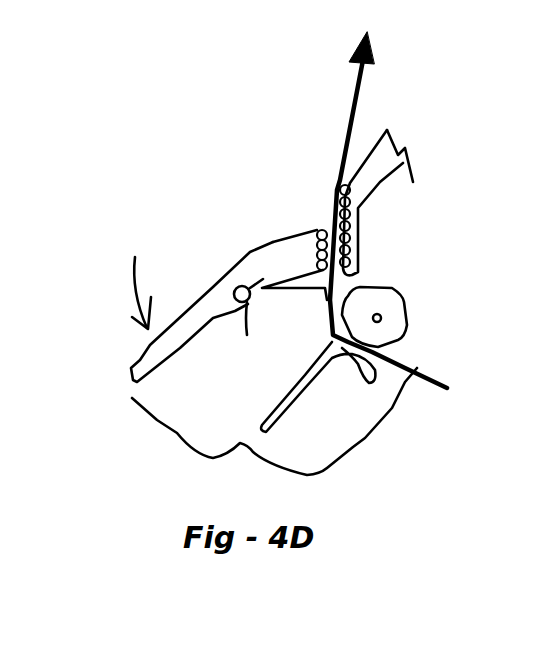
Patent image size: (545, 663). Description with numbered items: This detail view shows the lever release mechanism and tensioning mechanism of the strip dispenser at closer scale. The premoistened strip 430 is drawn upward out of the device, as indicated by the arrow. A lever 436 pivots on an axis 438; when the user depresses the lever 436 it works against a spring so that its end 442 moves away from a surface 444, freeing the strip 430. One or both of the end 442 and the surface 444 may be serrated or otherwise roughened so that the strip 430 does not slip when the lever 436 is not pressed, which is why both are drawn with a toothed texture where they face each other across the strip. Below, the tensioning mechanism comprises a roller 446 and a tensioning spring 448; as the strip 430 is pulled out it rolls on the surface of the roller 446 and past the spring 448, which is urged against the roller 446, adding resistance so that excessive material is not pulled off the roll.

The premoistened strip 430 is at (352, 92).
The lever 436 is at (131, 362).
The axis 438 is at (230, 290).
The end 442 is at (305, 231).
The surface 444 is at (343, 220).
The roller 446 is at (402, 308).
The tensioning spring 448 is at (308, 383).